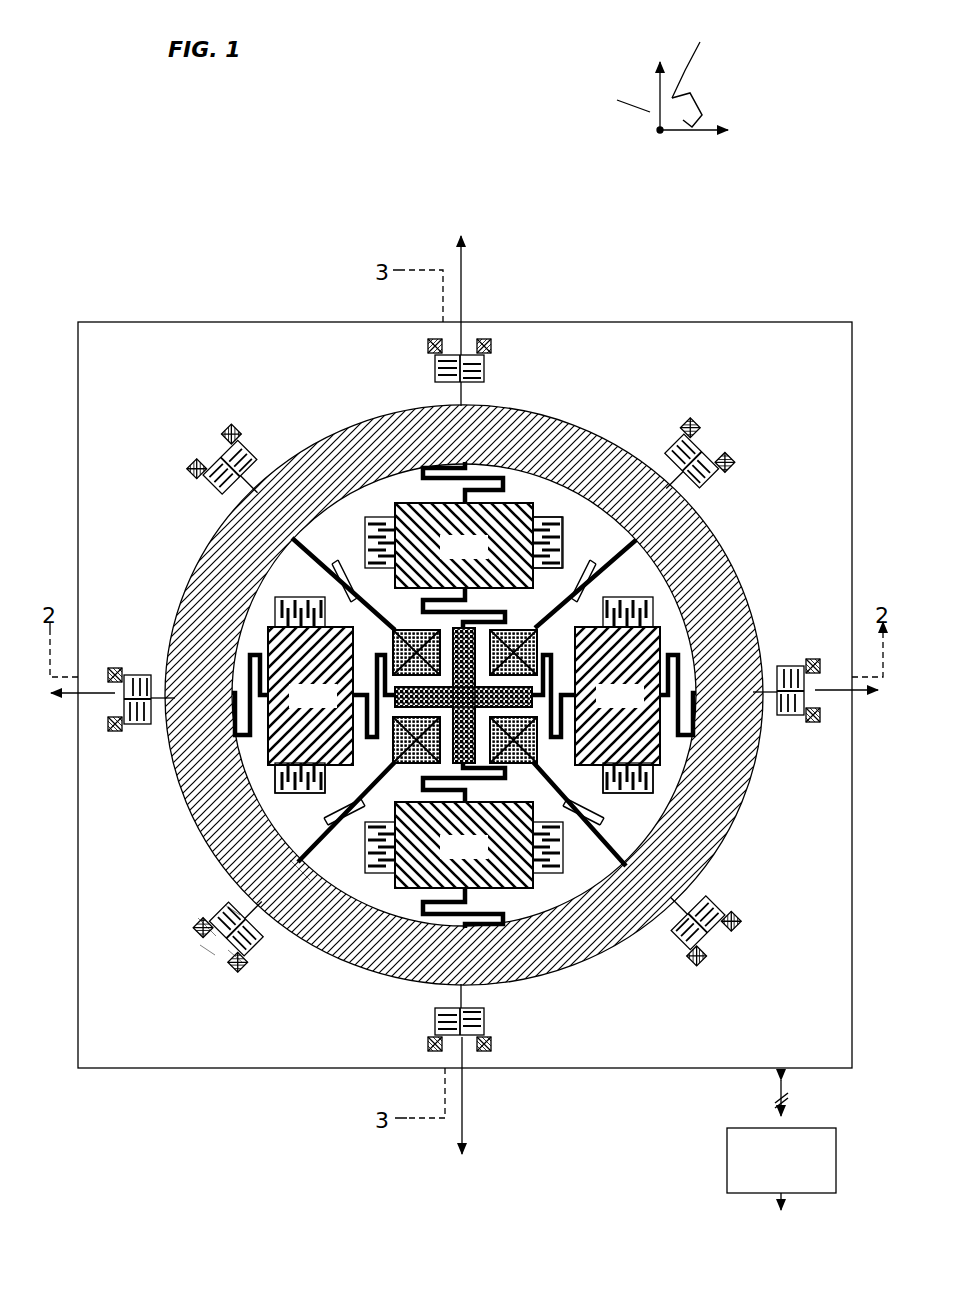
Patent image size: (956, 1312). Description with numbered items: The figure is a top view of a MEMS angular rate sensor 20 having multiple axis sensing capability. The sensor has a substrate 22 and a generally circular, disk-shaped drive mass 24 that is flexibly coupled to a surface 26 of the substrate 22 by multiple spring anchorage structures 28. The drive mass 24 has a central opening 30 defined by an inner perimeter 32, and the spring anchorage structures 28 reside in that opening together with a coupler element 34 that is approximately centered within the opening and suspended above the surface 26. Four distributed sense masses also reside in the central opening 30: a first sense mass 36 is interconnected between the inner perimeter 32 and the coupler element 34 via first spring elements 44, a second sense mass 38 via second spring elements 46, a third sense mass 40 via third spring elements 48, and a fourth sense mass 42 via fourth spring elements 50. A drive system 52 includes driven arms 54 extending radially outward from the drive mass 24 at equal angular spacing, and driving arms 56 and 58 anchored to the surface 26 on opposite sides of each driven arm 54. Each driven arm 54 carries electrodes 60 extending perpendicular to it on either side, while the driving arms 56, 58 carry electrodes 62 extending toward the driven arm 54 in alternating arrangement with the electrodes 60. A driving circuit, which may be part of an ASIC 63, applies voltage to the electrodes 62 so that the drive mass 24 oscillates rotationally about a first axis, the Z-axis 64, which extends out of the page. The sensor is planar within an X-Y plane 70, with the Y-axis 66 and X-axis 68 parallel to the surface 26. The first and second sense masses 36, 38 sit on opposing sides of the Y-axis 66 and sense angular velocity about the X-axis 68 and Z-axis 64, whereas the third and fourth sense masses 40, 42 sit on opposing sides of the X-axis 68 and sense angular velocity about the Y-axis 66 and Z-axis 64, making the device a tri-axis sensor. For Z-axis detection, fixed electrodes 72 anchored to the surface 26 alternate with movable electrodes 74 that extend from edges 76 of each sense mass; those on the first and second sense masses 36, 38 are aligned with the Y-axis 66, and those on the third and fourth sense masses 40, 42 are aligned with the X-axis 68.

The angular rate sensor 20 is at (581, 1232).
The substrate 22 is at (175, 322).
The drive mass 24 is at (362, 440).
The surface of substrate 26 is at (143, 377).
The spring anchorage structures 28 is at (296, 550).
The central opening 30 is at (525, 478).
The inner perimeter 32 is at (537, 528).
The coupler element 34 is at (456, 644).
The first sense mass 36 is at (326, 708).
The second sense mass 38 is at (633, 708).
The third sense mass 40 is at (478, 559).
The fourth sense mass 42 is at (478, 859).
The first spring elements 44 is at (366, 660).
The second spring elements 46 is at (560, 660).
The third spring elements 48 is at (436, 592).
The fourth spring elements 50 is at (434, 800).
The drive system 52 is at (505, 366).
The driven arms 54 is at (300, 878).
The driving arm 56 is at (215, 922).
The driving arm 58 is at (238, 960).
The electrodes 60 is at (208, 952).
The electrodes 62 is at (232, 905).
The application specific integrated circuit 63 is at (727, 1135).
The Z-axis 64 is at (657, 138).
The Y-axis 66 is at (452, 228).
The X-axis 68 is at (878, 728).
The X-Y plane 70 is at (705, 100).
The fixed electrodes 72 is at (552, 530).
The movable electrodes 74 is at (545, 517).
The edges 76 is at (272, 770).